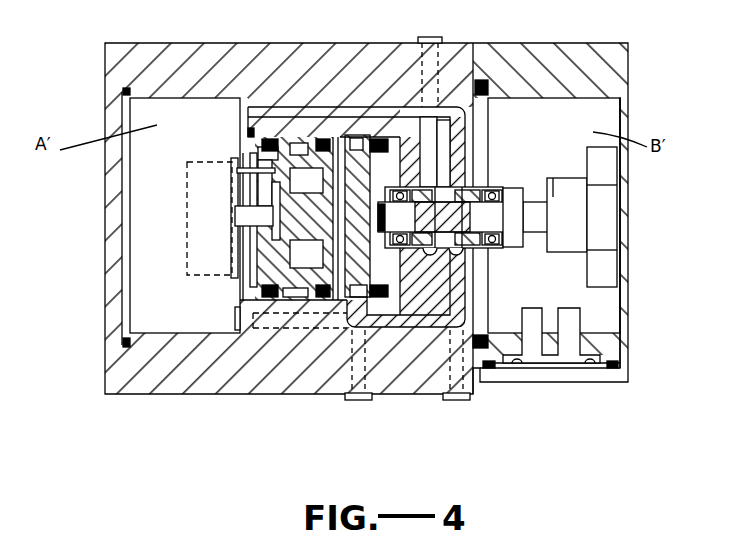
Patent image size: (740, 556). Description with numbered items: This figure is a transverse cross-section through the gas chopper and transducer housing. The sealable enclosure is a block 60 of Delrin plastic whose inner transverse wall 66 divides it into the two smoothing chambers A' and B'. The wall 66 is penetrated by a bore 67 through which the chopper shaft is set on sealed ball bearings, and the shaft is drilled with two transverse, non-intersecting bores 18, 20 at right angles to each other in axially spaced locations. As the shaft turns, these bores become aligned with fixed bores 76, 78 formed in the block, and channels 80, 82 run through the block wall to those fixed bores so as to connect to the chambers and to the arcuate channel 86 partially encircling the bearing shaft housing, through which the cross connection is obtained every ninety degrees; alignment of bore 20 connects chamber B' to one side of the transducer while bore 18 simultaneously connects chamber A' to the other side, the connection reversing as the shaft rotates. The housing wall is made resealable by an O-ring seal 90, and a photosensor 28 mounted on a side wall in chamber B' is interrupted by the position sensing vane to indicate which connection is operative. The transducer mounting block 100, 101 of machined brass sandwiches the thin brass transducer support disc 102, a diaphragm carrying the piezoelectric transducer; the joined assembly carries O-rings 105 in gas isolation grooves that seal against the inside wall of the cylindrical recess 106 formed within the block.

The transverse bore 18 is at (470, 220).
The transverse bore 20 is at (432, 214).
The photosensor 28 is at (583, 320).
The block 60 is at (233, 394).
The inner transverse wall 66 is at (490, 318).
The bore 67 is at (478, 187).
The fixed bore 76 is at (427, 147).
The fixed bore 78 is at (427, 175).
The channel 80 is at (457, 251).
The channel 82 is at (428, 257).
The arcuate channel 86 is at (430, 394).
The O-ring seal 90 is at (483, 80).
The transducer mounting block 100 is at (296, 255).
The transducer mounting block 101 is at (361, 198).
The transducer support disc 102 is at (327, 207).
The O-rings 105 is at (378, 139).
The cylindrical recess 106 is at (240, 142).